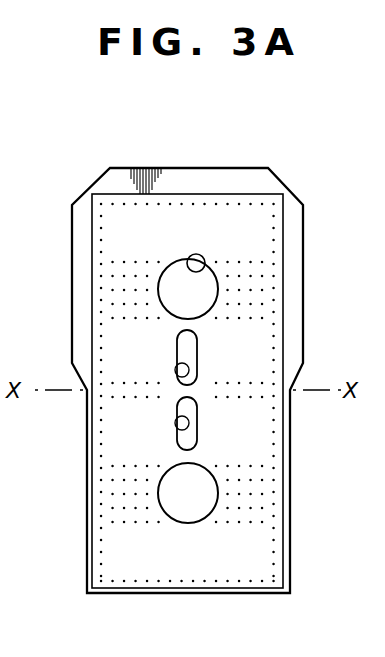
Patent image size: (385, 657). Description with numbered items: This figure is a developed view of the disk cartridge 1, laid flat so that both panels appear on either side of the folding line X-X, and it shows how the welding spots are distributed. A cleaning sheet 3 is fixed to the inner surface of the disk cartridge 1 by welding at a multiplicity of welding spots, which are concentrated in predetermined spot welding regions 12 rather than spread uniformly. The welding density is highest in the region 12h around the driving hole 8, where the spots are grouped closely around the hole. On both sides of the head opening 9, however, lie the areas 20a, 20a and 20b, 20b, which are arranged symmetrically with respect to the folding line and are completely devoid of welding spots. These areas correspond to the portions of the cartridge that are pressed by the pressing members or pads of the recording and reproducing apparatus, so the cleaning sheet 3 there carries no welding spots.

The disk cartridge 1 is at (90, 189).
The cleaning sheet 3 is at (203, 194).
The driving hole 8 is at (207, 262).
The head opening 9 is at (178, 375).
The welding spot region 12 is at (275, 522).
The region around driving hole 12h is at (227, 285).
The non-welding area 20a is at (137, 358).
The non-welding area 20b is at (137, 442).